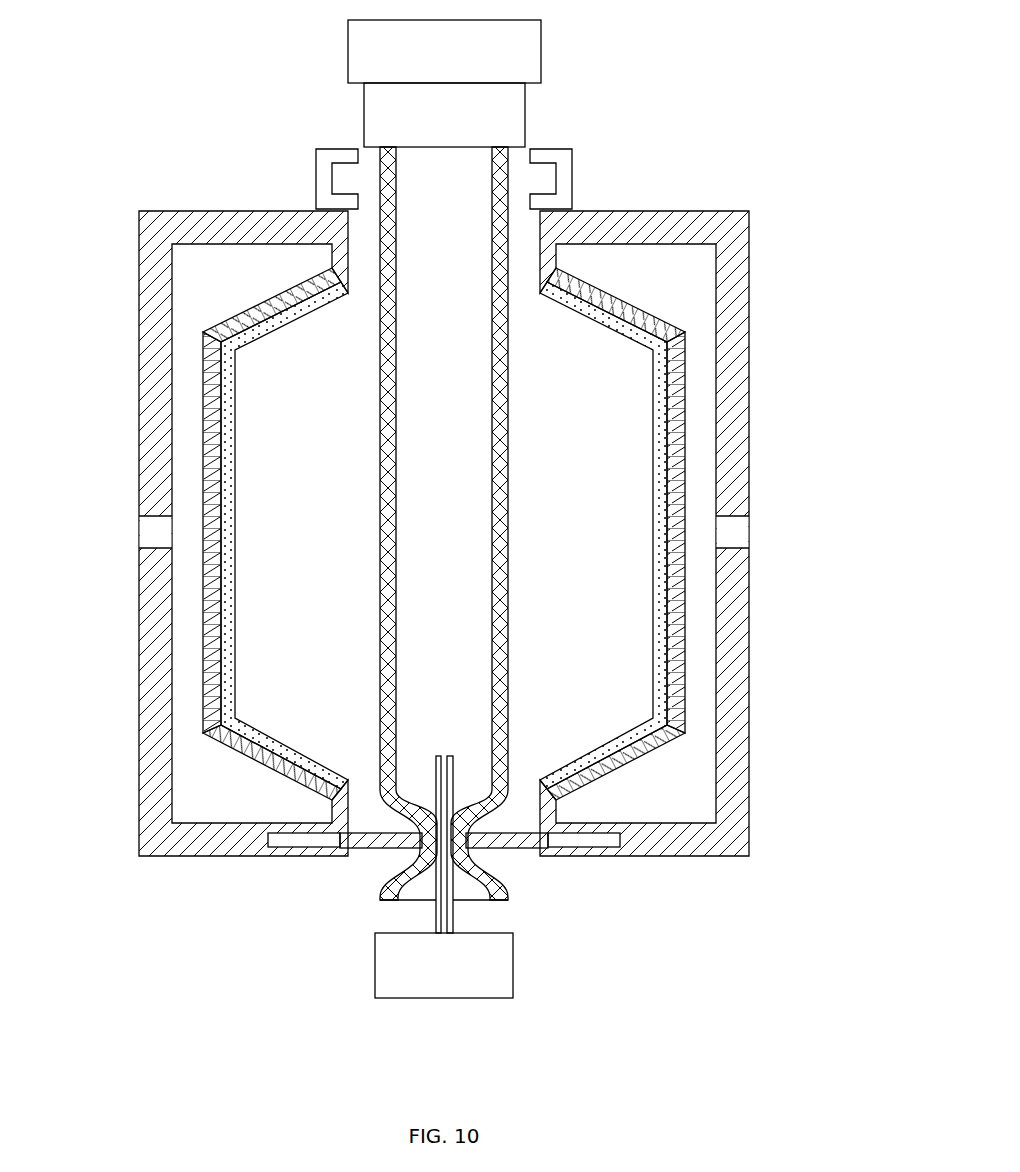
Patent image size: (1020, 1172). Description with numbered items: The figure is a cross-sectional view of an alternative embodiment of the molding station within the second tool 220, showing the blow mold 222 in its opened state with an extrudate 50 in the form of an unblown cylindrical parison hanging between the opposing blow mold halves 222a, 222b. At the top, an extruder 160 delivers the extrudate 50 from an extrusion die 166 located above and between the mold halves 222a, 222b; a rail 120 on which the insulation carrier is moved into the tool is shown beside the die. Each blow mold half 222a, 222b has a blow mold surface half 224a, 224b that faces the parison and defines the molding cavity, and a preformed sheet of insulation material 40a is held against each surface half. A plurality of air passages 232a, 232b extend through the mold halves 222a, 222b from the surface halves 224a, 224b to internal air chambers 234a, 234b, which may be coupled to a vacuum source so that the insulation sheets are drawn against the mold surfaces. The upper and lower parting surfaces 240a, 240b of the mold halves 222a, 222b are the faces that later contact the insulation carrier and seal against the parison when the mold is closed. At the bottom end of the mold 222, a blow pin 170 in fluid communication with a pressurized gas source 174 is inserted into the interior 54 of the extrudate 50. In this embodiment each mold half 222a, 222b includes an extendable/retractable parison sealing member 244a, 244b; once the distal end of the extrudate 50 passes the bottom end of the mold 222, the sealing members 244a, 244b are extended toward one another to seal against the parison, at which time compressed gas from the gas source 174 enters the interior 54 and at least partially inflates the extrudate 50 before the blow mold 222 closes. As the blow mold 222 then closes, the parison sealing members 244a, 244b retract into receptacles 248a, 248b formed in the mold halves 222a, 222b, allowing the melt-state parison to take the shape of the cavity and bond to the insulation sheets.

The second tool 220 is at (640, 112).
The blow mold 222 is at (152, 147).
The blow mold half 222a is at (157, 209).
The blow mold half 222b is at (718, 208).
The rail 120 is at (317, 147).
The extruder 160 is at (444, 51).
The extrusion die 166 is at (444, 115).
The pressurized gas source 174 is at (444, 965).
The blow pin 170 is at (453, 916).
The extrudate 50 is at (376, 449).
The interior 54 is at (460, 460).
The preformed sheet of insulation material 40a is at (258, 345).
The blow mold surface half 224a is at (218, 628).
The blow mold surface half 224b is at (670, 628).
The air passages 232a is at (273, 765).
The air passages 232b is at (615, 765).
The internal air chamber 234a is at (205, 806).
The internal air chamber 234b is at (683, 806).
The parting surface 240a is at (336, 240).
The parting surface 240b is at (552, 240).
The parison sealing member 244a is at (380, 833).
The parison sealing member 244b is at (508, 833).
The receptacle 248a is at (285, 838).
The receptacle 248b is at (592, 838).